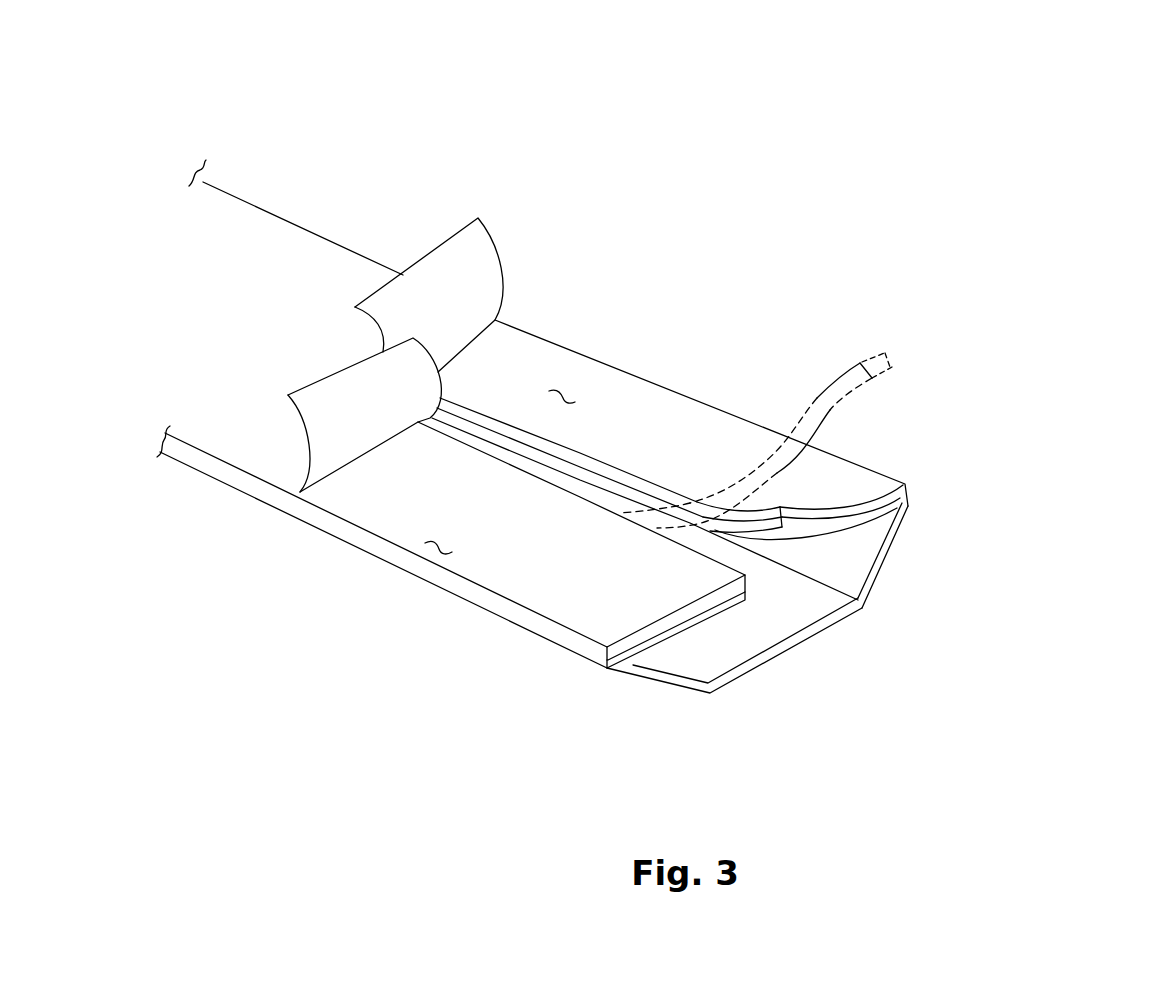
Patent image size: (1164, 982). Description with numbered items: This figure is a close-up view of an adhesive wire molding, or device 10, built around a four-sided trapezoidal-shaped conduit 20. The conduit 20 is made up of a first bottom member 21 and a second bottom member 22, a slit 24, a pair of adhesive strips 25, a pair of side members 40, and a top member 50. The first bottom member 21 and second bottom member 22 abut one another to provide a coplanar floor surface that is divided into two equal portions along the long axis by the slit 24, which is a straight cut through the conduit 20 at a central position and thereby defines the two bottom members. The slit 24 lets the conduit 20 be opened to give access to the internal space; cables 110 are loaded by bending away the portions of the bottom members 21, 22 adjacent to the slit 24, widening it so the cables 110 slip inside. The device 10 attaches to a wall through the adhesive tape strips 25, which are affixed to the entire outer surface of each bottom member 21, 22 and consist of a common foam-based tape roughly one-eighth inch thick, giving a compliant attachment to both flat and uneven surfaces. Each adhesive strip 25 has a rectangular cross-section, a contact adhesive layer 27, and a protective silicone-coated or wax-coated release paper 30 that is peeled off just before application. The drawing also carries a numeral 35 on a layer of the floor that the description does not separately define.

The adhesive wire molding 10 is at (1053, 156).
The conduit 20 is at (900, 583).
The first bottom member 21 is at (852, 510).
The second bottom member 22 is at (695, 622).
The slit 24 is at (610, 485).
The adhesive strips 25 is at (385, 493).
The contact adhesive layer 27 is at (558, 400).
The release paper 30 is at (407, 368).
The top layer 35 is at (708, 602).
The side members 40 is at (887, 552).
The top member 50 is at (807, 643).
The cables 110 is at (843, 392).